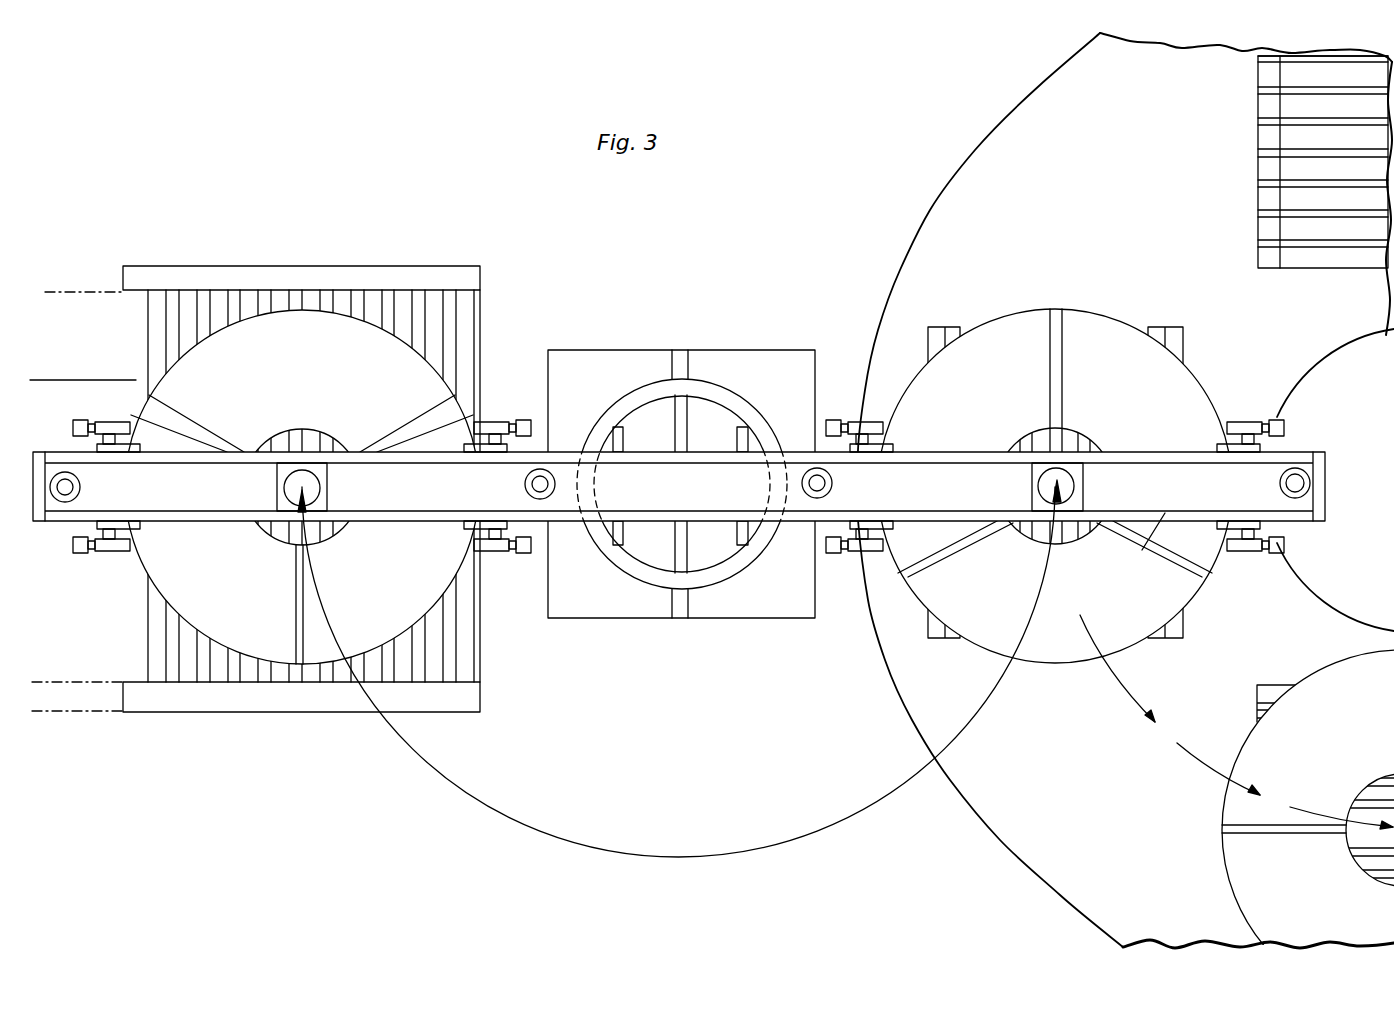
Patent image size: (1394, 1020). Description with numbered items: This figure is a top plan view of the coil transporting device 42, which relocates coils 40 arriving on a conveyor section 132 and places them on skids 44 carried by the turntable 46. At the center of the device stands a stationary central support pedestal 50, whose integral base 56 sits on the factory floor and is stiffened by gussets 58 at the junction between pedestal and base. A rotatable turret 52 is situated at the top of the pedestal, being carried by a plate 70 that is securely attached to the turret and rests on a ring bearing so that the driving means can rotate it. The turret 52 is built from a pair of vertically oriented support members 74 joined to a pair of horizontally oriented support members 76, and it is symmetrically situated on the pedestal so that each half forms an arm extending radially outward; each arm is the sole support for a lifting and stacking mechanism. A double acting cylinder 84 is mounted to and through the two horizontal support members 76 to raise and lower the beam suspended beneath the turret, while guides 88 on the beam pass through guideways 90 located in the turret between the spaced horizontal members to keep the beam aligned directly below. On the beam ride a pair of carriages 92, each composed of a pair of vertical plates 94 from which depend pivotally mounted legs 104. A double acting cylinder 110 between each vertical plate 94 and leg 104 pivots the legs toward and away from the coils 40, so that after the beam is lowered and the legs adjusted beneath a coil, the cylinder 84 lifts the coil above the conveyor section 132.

The conveyor section 132 is at (392, 262).
The transporting device 42 is at (590, 268).
The skids 44 is at (1273, 140).
The turntable 46 is at (1050, 108).
The coils 40 is at (294, 372).
The central support pedestal 50 is at (640, 388).
The rotatable turret 52 is at (658, 523).
The base 56 is at (777, 365).
The gussets 58 is at (692, 367).
The plate 70 is at (737, 567).
The vertical support members 74 is at (1165, 452).
The horizontal support members 76 is at (223, 478).
The double acting cylinder 84 is at (302, 472).
The guides 88 is at (80, 483).
The guideways 90 is at (73, 502).
The carriages 92 is at (108, 563).
The vertical plates 94 is at (135, 448).
The legs 104 is at (120, 428).
The double acting cylinder 110 is at (72, 431).